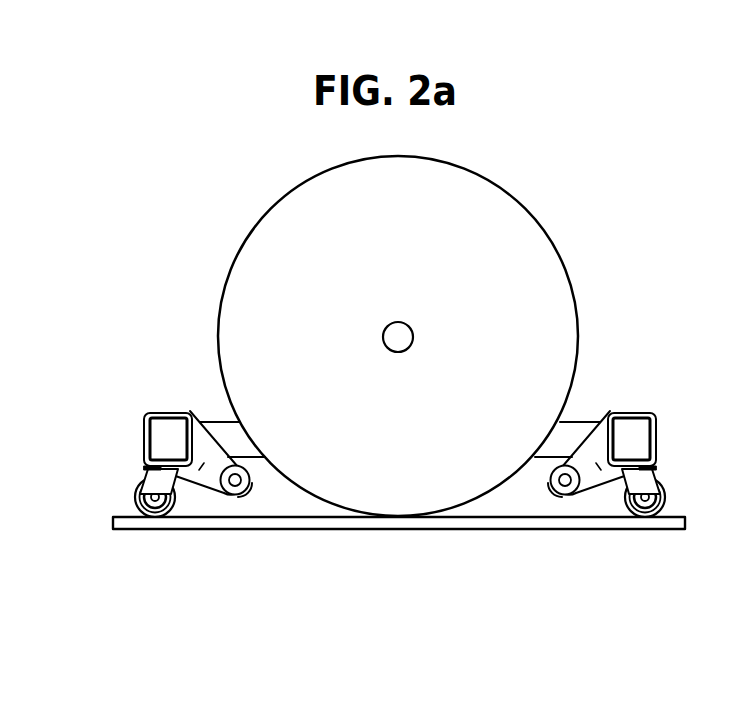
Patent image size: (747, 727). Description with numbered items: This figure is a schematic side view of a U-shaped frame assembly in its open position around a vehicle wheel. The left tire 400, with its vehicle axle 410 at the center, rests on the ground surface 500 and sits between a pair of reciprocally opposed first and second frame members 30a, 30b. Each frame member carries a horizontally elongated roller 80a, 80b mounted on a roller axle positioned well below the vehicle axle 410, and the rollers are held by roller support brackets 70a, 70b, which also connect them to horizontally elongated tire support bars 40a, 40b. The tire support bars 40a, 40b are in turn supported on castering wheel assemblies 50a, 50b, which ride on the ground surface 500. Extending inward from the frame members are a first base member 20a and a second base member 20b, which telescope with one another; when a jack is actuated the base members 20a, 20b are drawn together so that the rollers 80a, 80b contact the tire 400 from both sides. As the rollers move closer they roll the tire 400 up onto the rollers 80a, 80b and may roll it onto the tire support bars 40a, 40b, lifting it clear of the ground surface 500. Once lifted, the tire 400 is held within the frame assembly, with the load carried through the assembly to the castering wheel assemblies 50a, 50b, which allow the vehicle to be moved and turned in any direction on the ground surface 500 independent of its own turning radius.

The left tire 400 is at (498, 202).
The vehicle axle 410 is at (405, 322).
The ground surface 500 is at (132, 520).
The first base member 20a is at (209, 418).
The second base member 20b is at (592, 418).
The first frame member 30a is at (138, 439).
The second frame member 30b is at (664, 468).
The horizontally elongated tire support bar 40a is at (158, 438).
The horizontally elongated tire support bar 40b is at (642, 438).
The castering wheel assembly 50a is at (142, 487).
The castering wheel assembly 50b is at (660, 507).
The roller support bracket 70a is at (201, 467).
The roller support bracket 70b is at (599, 467).
The horizontally elongated roller 80a is at (250, 492).
The horizontally elongated roller 80b is at (550, 492).